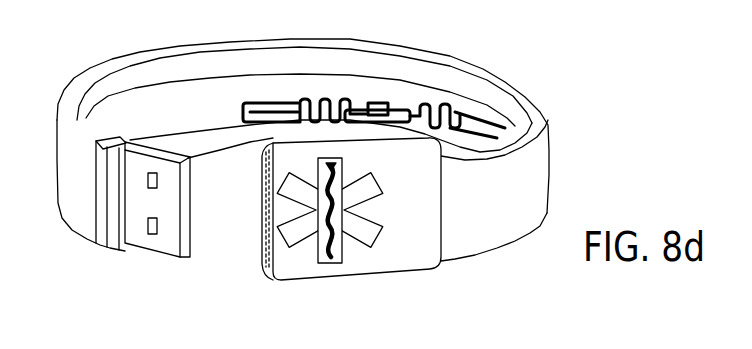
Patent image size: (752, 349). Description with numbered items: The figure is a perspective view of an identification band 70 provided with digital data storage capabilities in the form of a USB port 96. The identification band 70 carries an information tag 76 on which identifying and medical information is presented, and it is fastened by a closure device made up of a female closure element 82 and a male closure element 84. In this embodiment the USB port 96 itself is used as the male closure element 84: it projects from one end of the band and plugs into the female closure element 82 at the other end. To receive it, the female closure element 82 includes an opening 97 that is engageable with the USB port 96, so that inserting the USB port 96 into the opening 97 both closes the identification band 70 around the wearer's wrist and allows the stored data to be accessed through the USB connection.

The identification band 70 is at (514, 88).
The information tag 76 is at (206, 100).
The female closure element 82 is at (343, 280).
The male closure element 84 is at (110, 262).
The USB port 96 is at (170, 257).
The opening 97 is at (265, 272).